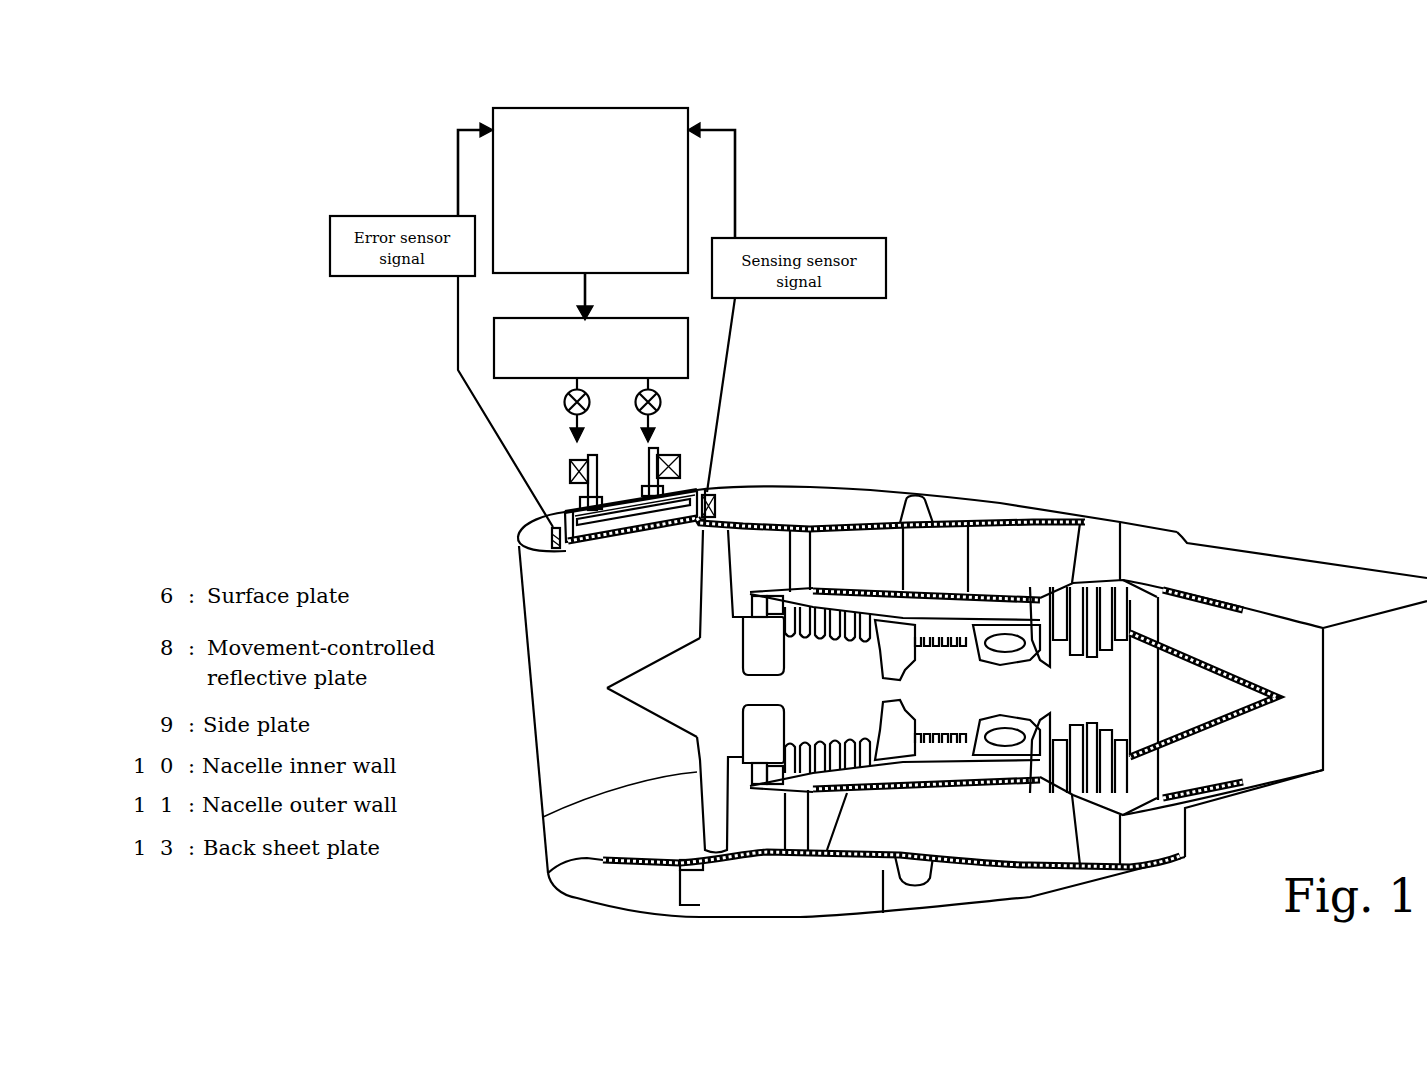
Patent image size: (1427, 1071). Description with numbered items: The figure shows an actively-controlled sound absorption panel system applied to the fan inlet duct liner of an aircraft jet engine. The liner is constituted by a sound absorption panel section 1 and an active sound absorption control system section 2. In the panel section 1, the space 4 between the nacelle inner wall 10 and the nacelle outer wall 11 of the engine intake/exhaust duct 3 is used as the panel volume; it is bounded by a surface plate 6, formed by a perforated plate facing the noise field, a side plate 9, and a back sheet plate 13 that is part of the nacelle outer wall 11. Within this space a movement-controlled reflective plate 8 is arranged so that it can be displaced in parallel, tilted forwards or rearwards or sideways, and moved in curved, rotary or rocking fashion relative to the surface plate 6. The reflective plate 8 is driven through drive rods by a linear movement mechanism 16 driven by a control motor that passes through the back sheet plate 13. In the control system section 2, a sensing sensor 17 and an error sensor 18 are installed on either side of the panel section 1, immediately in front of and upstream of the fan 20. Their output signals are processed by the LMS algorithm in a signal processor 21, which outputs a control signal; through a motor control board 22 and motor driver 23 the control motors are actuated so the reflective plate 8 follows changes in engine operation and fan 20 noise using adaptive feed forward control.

The sound absorption panel section 1 is at (488, 453).
The active sound absorption control system section 2 is at (796, 203).
The engine intake/exhaust duct 3 is at (1043, 548).
The space 4 is at (822, 507).
The surface plate 6 is at (615, 538).
The movement-controlled reflective plate 8 is at (632, 497).
The side plate 9 is at (692, 493).
The nacelle inner wall 10 is at (530, 552).
The nacelle outer wall 11 is at (867, 486).
The back sheet plate 13 is at (618, 500).
The linear movement mechanism 16 is at (570, 465).
The sensing sensor 17 is at (712, 494).
The error sensor 18 is at (548, 532).
The fan 20 is at (541, 817).
The signal processor 21 is at (642, 108).
The motor control board 22 is at (692, 342).
The motor driver 23 is at (564, 401).